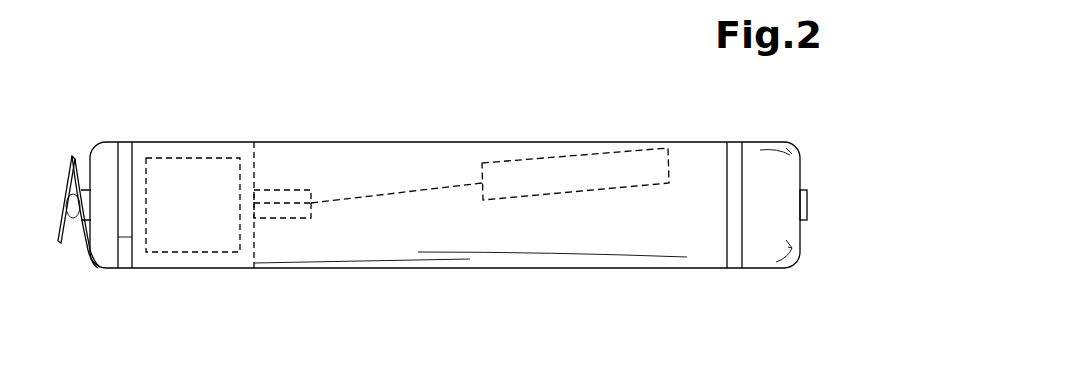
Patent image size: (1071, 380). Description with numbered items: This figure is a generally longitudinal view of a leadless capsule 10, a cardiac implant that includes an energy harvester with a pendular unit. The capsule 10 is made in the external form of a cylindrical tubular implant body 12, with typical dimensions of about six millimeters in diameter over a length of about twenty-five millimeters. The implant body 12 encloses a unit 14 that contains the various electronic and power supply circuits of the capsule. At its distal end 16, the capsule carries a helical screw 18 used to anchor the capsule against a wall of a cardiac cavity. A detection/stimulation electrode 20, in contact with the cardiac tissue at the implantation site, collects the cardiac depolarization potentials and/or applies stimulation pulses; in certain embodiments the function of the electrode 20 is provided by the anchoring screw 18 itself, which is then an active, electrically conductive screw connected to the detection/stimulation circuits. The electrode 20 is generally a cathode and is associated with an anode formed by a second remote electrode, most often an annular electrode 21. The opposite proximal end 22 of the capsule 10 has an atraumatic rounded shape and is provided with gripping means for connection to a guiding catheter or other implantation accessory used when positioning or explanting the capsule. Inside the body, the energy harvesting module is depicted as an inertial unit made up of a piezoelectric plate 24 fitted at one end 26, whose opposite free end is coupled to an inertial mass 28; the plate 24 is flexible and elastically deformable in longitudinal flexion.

The leadless capsule 10 is at (477, 116).
The cylindrical tubular implant body 12 is at (392, 142).
The unit 14 is at (190, 173).
The distal end 16 is at (64, 257).
The helical screw 18 is at (74, 156).
The detection/stimulation electrode 20 is at (86, 203).
The annular electrode 21 is at (125, 237).
The proximal end 22 is at (823, 153).
The piezoelectric plate 24 is at (372, 197).
The end 26 is at (282, 214).
The inertial mass 28 is at (619, 167).